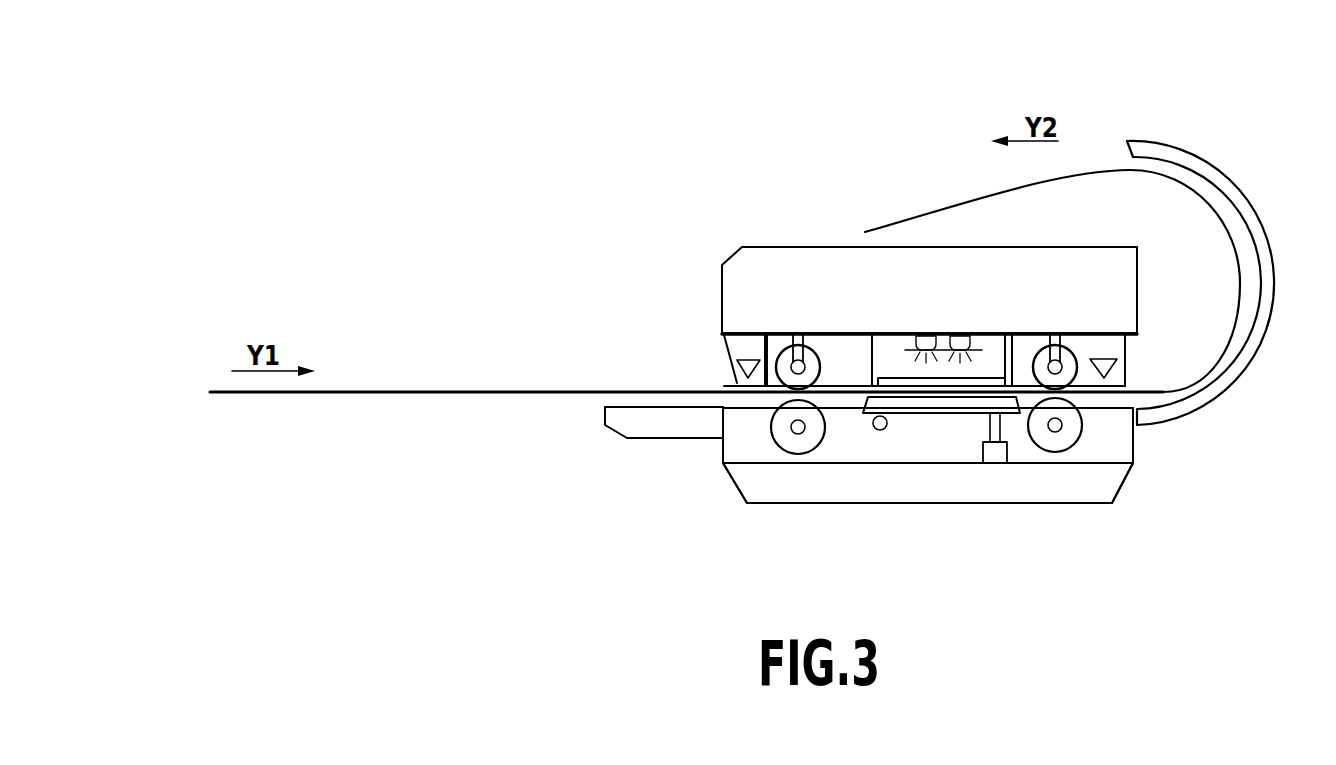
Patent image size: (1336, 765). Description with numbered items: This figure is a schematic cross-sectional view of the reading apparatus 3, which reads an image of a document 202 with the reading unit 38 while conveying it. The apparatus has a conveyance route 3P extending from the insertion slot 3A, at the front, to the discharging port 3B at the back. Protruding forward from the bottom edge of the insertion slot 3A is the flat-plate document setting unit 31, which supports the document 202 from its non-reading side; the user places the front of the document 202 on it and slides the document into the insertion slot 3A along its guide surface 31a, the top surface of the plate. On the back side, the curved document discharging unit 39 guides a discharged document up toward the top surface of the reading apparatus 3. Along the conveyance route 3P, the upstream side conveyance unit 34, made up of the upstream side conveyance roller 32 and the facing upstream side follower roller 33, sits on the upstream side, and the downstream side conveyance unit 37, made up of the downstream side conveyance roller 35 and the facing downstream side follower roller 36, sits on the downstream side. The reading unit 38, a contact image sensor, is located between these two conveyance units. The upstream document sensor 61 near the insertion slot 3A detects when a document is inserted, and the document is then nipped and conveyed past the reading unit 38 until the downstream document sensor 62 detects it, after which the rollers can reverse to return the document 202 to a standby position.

The reading apparatus 3 is at (916, 111).
The document 202 is at (485, 393).
The document setting unit 31 is at (643, 423).
The guide surface 31a is at (650, 407).
The upstream side conveyance roller 32 is at (765, 368).
The upstream side follower roller 33 is at (806, 364).
The upstream side conveyance unit 34 is at (839, 288).
The downstream side conveyance roller 35 is at (1028, 388).
The downstream side follower roller 36 is at (1062, 378).
The downstream side conveyance unit 37 is at (1068, 349).
The reading unit 38 is at (942, 370).
The document discharging unit 39 is at (1210, 162).
The insertion slot 3A is at (747, 397).
The discharging port 3B is at (1100, 398).
The conveyance route 3P is at (843, 390).
The upstream document sensor 61 is at (737, 360).
The downstream document sensor 62 is at (1107, 360).